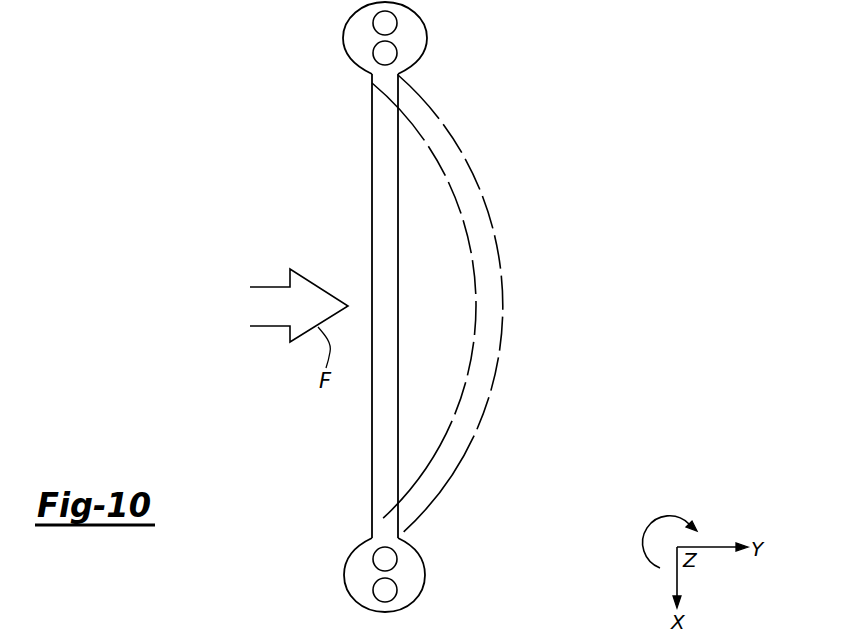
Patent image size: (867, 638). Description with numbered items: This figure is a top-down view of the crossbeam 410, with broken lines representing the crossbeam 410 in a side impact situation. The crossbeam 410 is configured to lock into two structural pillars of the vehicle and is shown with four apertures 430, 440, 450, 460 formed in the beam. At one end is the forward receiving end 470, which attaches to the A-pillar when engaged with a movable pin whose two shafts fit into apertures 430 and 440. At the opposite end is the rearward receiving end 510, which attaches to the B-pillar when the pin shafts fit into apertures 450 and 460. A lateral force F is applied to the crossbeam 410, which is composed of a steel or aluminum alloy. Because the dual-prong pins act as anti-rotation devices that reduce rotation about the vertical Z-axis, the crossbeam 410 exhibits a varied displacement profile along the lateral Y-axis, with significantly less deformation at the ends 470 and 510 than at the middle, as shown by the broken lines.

The crossbeam 410 is at (372, 207).
The aperture 430 is at (385, 23).
The aperture 440 is at (385, 53).
The aperture 450 is at (385, 559).
The aperture 460 is at (385, 590).
The forward receiving end 470 is at (316, 36).
The rearward receiving end 510 is at (315, 576).